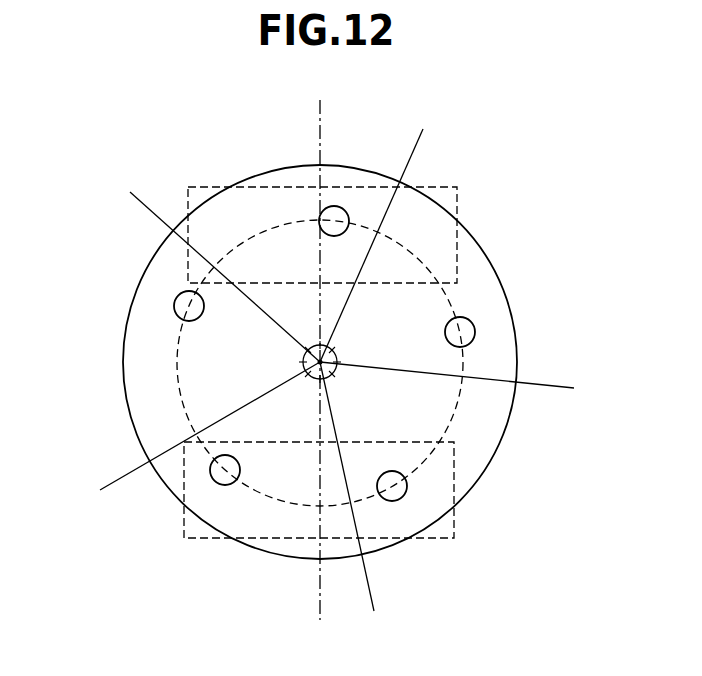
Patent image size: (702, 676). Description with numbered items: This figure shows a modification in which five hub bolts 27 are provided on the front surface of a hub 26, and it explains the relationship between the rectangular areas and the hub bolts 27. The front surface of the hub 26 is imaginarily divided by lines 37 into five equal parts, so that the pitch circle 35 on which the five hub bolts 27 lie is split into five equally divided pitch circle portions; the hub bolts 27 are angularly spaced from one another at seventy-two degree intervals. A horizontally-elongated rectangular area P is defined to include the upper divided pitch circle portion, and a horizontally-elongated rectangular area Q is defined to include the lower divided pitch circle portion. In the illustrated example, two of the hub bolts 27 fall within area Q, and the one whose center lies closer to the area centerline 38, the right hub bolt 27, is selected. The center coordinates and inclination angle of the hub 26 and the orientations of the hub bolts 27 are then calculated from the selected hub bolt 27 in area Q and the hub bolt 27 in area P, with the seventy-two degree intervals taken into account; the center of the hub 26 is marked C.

The hub 26 is at (485, 296).
The hub bolts 27 is at (339, 213).
The pitch circle 35 is at (177, 348).
The lines 37 is at (152, 205).
The area centerline 38 is at (318, 600).
The rectangular area P is at (448, 196).
The rectangular area Q is at (442, 530).
The center C is at (338, 357).